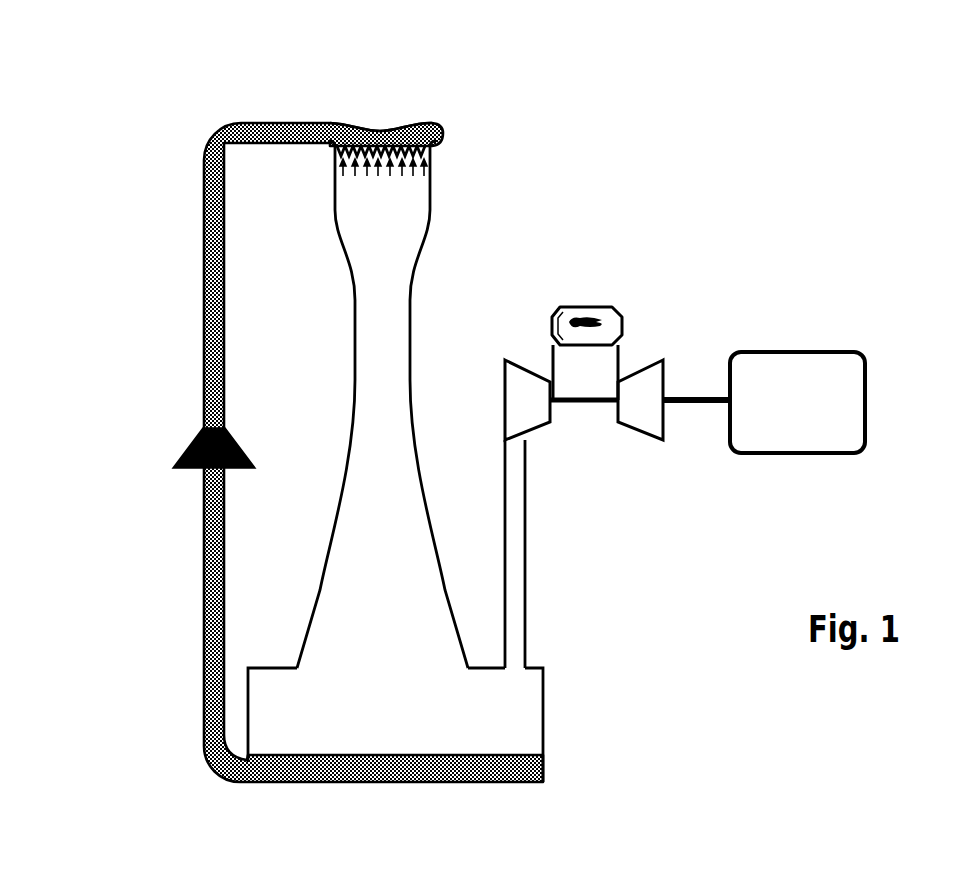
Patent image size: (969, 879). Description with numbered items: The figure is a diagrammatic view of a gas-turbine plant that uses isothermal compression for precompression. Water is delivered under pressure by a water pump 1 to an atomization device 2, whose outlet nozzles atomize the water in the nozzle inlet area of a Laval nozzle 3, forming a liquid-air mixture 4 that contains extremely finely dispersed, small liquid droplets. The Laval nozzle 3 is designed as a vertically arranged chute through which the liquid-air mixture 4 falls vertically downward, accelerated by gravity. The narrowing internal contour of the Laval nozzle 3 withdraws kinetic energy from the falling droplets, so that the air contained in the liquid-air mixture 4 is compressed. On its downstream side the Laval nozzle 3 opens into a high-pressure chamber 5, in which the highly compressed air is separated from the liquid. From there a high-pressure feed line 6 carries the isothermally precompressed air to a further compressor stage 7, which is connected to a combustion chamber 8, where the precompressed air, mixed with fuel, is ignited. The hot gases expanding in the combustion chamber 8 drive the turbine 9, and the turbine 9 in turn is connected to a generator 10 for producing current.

The water pump 1 is at (185, 448).
The atomization device 2 is at (380, 128).
The Laval nozzle 3 is at (373, 330).
The liquid-air mixture 4 is at (377, 178).
The high-pressure chamber 5 is at (493, 716).
The high-pressure feed line 6 is at (515, 547).
The further compressor stage 7 is at (523, 387).
The combustion chamber 8 is at (585, 318).
The turbine 9 is at (648, 387).
The generator 10 is at (805, 370).